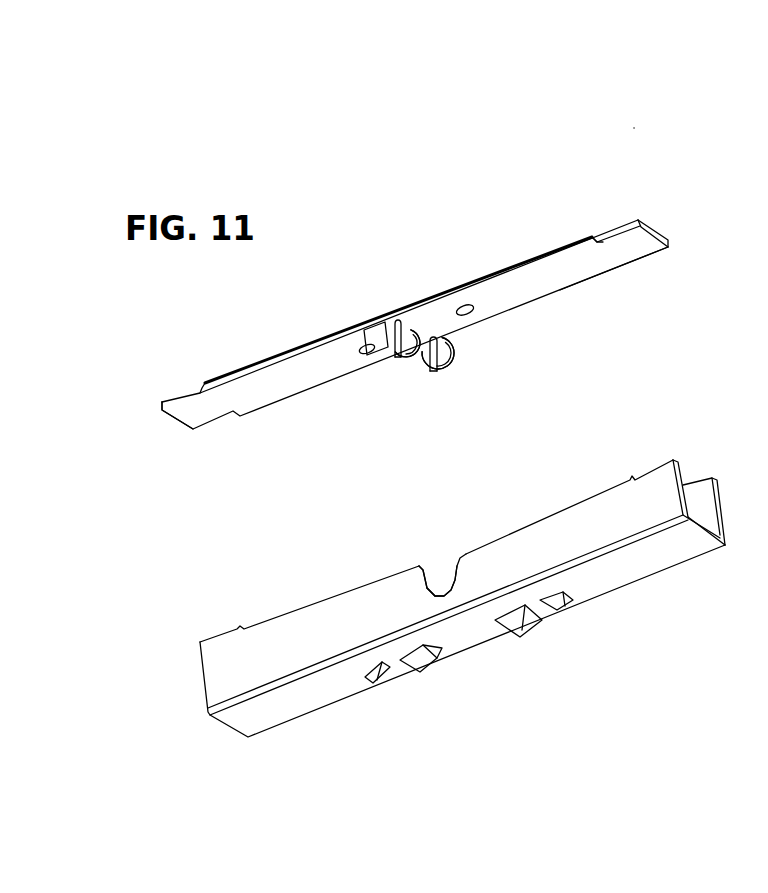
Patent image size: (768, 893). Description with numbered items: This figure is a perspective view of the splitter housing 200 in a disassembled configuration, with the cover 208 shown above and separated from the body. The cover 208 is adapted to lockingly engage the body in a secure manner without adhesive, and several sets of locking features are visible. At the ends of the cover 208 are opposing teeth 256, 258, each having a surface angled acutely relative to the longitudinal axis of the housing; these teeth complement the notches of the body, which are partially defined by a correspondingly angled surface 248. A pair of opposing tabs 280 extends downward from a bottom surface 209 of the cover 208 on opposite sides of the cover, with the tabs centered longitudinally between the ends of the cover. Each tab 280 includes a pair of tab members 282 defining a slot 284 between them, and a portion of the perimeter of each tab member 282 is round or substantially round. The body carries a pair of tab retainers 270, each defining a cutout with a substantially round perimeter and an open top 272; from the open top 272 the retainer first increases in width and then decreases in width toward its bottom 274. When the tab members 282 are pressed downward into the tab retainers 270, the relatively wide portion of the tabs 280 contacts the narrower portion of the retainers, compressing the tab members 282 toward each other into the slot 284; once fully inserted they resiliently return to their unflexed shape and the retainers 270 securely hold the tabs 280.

The splitter housing 200 is at (640, 122).
The cover 208 is at (510, 262).
The bottom surface 209 is at (271, 388).
The tooth 256 is at (590, 238).
The tooth 258 is at (634, 261).
The tab 280 is at (385, 372).
The tab member 282 is at (385, 346).
The slot 284 is at (400, 358).
The surface 248 is at (245, 636).
The tab retainer 270 is at (422, 589).
The open top 272 is at (441, 572).
The bottom 274 is at (443, 596).